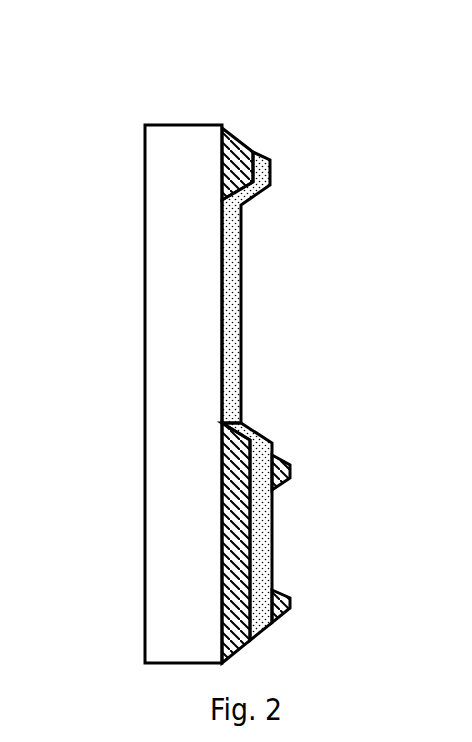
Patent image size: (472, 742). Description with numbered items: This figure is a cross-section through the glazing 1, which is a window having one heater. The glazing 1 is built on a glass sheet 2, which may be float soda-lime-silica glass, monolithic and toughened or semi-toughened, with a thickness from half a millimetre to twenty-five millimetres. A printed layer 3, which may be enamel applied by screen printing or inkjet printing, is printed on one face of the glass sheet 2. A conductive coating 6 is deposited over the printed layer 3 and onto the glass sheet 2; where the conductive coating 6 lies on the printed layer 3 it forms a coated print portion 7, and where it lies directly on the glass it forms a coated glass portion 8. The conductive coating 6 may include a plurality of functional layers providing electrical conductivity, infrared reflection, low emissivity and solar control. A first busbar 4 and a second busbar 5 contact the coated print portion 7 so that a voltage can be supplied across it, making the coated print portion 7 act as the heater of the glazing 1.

The glazing 1 is at (108, 95).
The glass sheet 2 is at (185, 124).
The printed layer 3 is at (238, 134).
The first busbar 4 is at (270, 603).
The second busbar 5 is at (269, 473).
The conductive coating 6 is at (234, 345).
The coated print portion 7 is at (274, 534).
The coated glass portion 8 is at (243, 313).